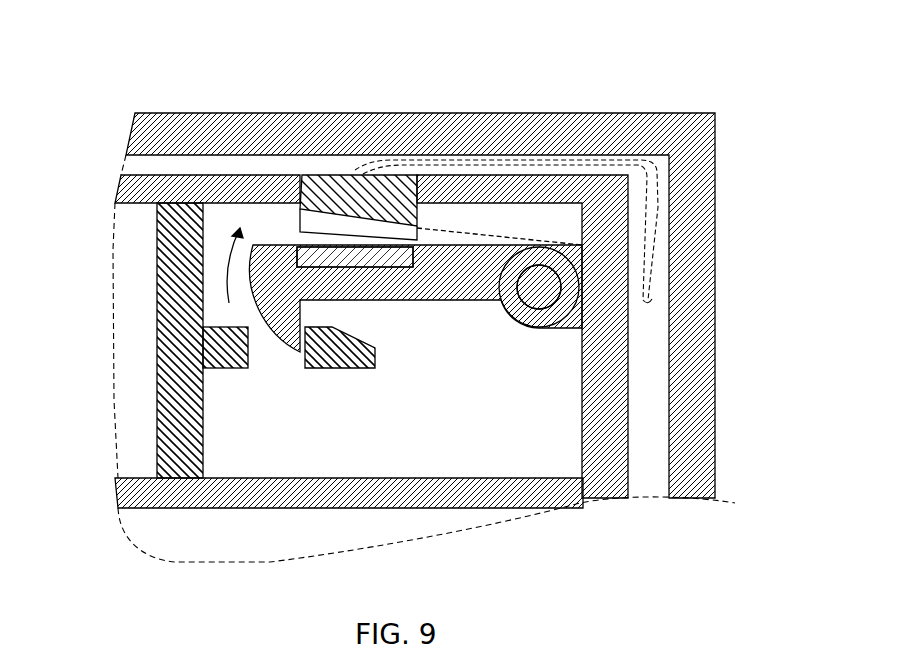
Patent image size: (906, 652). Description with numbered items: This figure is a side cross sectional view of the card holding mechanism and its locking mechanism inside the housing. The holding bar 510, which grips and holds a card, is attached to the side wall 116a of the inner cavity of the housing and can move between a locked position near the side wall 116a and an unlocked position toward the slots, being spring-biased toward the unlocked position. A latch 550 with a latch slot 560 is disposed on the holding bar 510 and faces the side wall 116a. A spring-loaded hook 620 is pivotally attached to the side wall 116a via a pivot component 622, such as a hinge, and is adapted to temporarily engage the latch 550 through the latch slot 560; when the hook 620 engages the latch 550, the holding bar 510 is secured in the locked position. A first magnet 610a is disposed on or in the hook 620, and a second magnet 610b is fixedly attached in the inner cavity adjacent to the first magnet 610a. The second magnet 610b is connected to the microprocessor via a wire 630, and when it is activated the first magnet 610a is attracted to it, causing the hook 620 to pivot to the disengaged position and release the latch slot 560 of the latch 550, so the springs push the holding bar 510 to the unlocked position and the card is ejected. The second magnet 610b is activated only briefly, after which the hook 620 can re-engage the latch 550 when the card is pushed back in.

The side wall 116a is at (628, 372).
The holding bar 510 is at (157, 435).
The latch 550 is at (168, 510).
The latch slot 560 is at (263, 350).
The first magnet 610a is at (303, 250).
The second magnet 610b is at (347, 172).
The hook 620 is at (253, 283).
The pivot component 622 is at (556, 330).
The wire 630 is at (645, 257).